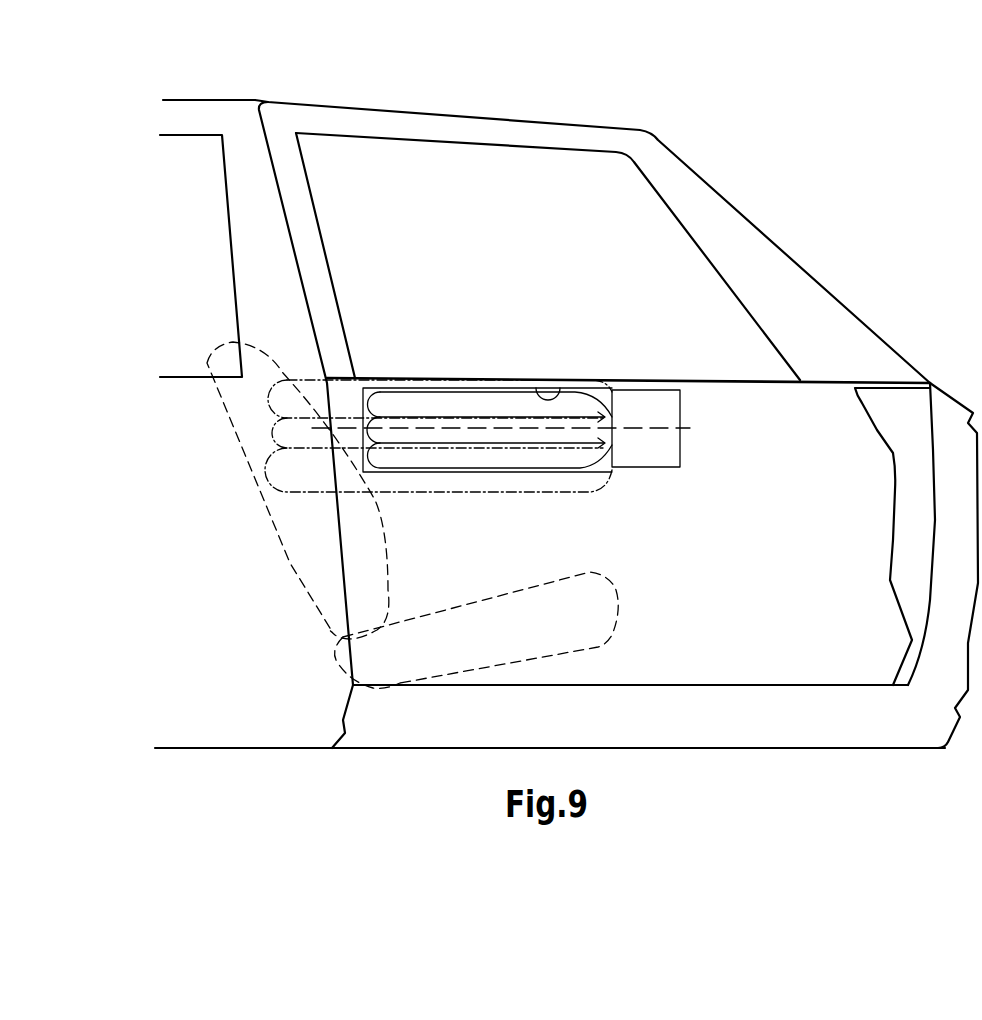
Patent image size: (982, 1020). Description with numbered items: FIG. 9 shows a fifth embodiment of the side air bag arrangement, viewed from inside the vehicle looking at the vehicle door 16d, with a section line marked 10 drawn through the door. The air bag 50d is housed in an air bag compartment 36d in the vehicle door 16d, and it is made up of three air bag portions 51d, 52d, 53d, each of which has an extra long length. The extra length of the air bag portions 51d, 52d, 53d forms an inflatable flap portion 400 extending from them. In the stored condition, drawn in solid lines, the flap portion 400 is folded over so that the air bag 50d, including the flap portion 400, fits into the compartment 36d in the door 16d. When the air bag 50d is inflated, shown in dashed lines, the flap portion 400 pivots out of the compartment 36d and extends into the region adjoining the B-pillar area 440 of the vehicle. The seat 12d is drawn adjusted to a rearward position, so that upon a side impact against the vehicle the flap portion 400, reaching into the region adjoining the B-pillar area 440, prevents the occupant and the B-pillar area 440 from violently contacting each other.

The section line 10- 10 is at (252, 402).
The seat 12d is at (288, 563).
The vehicle door 16d is at (467, 125).
The air bag compartment 36d is at (572, 378).
The air bag 50d is at (450, 453).
The air bag portion 51d is at (617, 388).
The air bag portion 52d is at (617, 470).
The air bag portion 53d is at (597, 493).
The inflatable flap portion 400 is at (272, 440).
The B-pillar area 440 is at (262, 207).